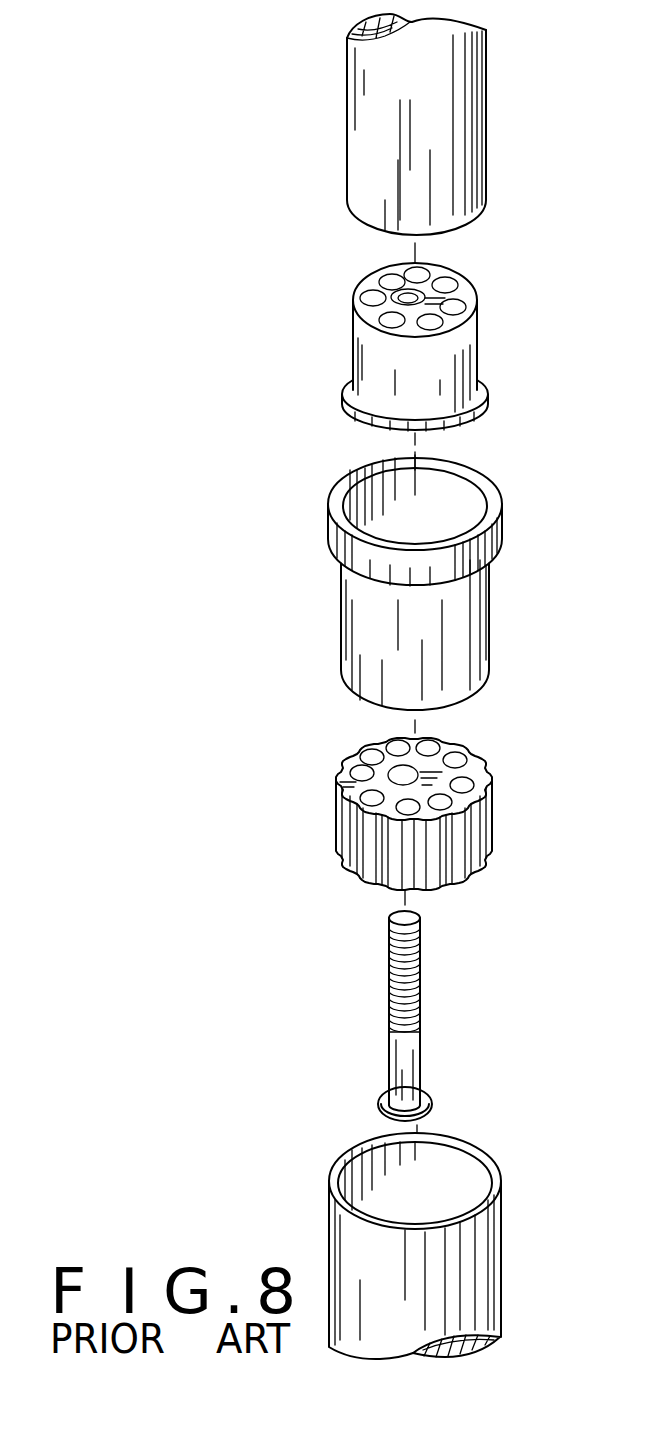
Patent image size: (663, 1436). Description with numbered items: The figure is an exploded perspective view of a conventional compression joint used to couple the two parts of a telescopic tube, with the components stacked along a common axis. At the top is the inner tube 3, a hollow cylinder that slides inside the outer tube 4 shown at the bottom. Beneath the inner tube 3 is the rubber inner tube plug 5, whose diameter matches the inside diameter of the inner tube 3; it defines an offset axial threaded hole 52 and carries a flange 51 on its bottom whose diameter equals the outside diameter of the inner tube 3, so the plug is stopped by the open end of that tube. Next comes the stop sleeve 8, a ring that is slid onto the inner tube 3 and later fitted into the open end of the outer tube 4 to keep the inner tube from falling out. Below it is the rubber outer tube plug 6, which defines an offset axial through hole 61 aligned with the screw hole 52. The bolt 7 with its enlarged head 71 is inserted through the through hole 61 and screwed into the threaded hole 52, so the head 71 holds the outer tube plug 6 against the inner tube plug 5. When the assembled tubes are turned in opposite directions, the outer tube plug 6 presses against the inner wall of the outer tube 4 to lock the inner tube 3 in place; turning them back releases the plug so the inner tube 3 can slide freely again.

The inner tube 3 is at (488, 110).
The inner tube plug 5 is at (470, 352).
The flange 51 is at (478, 407).
The offset axial threaded hole 52 is at (392, 296).
The stop sleeve 8 is at (472, 620).
The outer tube plug 6 is at (495, 830).
The offset axial through hole 61 is at (390, 769).
The bolt 7 is at (421, 986).
The enlarged head 71 is at (432, 1105).
The outer tube 4 is at (487, 1270).